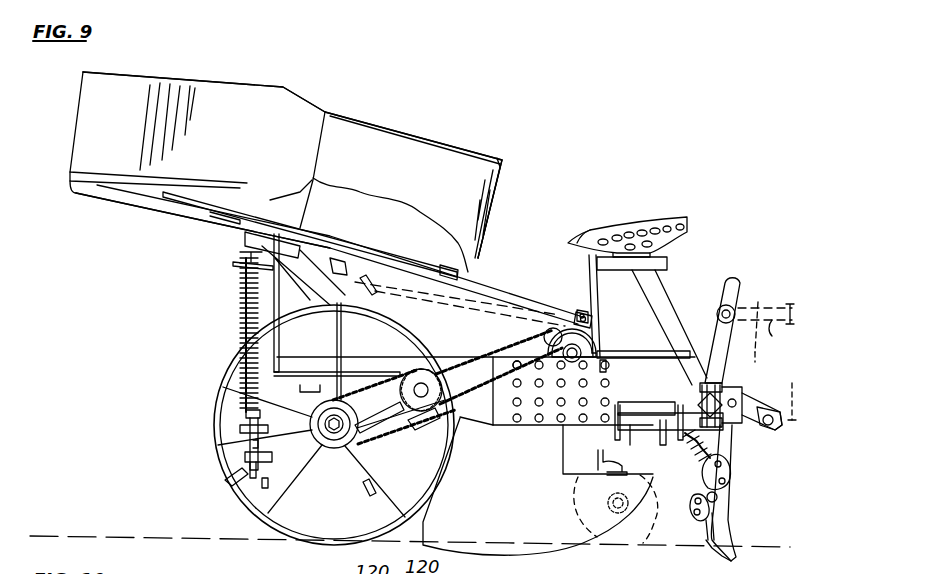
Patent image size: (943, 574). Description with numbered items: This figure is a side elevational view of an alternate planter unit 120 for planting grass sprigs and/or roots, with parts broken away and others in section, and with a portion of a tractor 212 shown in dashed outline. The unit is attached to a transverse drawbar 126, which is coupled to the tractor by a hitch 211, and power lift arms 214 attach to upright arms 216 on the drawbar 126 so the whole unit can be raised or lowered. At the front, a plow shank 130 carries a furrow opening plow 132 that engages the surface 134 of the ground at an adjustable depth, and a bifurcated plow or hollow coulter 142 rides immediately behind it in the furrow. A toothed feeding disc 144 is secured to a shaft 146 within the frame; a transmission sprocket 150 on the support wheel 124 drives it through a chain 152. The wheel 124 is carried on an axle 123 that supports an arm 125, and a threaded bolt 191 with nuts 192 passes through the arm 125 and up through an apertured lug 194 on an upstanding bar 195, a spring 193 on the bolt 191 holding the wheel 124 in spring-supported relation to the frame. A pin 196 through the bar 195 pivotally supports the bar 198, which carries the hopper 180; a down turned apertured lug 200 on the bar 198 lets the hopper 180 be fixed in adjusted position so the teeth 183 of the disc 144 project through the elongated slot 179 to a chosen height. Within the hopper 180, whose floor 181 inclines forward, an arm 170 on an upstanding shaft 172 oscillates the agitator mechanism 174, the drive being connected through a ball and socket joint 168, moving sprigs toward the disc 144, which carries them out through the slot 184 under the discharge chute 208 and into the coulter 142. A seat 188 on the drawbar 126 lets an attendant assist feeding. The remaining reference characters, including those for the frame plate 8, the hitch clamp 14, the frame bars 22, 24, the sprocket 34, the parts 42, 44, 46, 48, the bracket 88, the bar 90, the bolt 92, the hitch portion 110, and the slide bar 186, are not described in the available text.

The frame plate 8 is at (577, 424).
The hitch clamp 14 is at (698, 390).
The frame bar 22 is at (455, 300).
The tool bar 24 is at (606, 408).
The drive sprocket 34 is at (437, 378).
The sprocket 42 is at (540, 340).
The roller 44 is at (567, 356).
The bolt 46 is at (517, 363).
The chain 48 is at (507, 340).
The bracket 88 is at (594, 320).
The frame bar 90 is at (608, 348).
The bolt 92 is at (608, 366).
The hitch 110 is at (788, 407).
The planter unit 120 is at (478, 145).
The axle 123 is at (338, 440).
The support wheel 124 is at (222, 442).
The arm 125 is at (285, 452).
The transverse drawbar 126 is at (785, 483).
The plow shank 130 is at (777, 477).
The furrow opening plow 132 is at (737, 557).
The surface of the ground 134 is at (772, 545).
The bifurcated plow or coulter 142 is at (583, 548).
The toothed feeding disc 144 is at (372, 508).
The shaft 146 is at (405, 410).
The transmission sprocket 150 is at (368, 437).
The chain 152 is at (440, 455).
The ball and socket joint 168 is at (573, 312).
The arm 170 is at (345, 262).
The upstanding shaft 172 is at (246, 298).
The agitator mechanism 174 is at (318, 232).
The elongated slot 179 is at (250, 428).
The hopper 180 is at (497, 176).
The floor 181 is at (313, 178).
The teeth 183 is at (333, 327).
The slot 184 is at (458, 264).
The slide bar 186 is at (375, 257).
The seat 188 is at (675, 238).
The threaded bolt 191 is at (262, 490).
The nut 192 is at (258, 455).
The spring 193 is at (242, 296).
The apertured lug 194 is at (242, 278).
The upstanding bar 195 is at (262, 312).
The pin 196 is at (272, 200).
The bar 198 is at (232, 200).
The down turned apertured lug 200 is at (597, 308).
The discharge chute 208 is at (487, 275).
The hitch 211 is at (752, 388).
The tractor 212 is at (757, 507).
The power lift arm 214 is at (765, 323).
The upright arm 216 is at (713, 345).